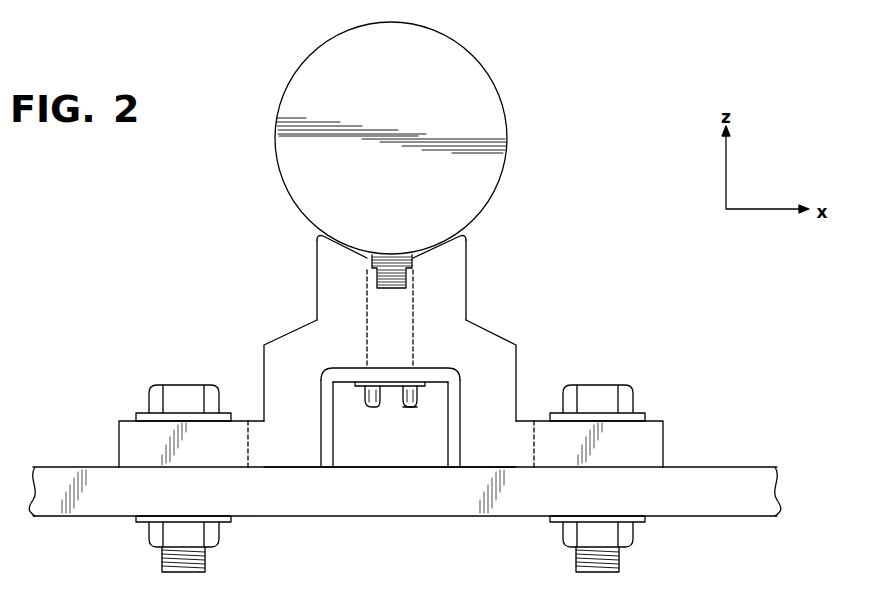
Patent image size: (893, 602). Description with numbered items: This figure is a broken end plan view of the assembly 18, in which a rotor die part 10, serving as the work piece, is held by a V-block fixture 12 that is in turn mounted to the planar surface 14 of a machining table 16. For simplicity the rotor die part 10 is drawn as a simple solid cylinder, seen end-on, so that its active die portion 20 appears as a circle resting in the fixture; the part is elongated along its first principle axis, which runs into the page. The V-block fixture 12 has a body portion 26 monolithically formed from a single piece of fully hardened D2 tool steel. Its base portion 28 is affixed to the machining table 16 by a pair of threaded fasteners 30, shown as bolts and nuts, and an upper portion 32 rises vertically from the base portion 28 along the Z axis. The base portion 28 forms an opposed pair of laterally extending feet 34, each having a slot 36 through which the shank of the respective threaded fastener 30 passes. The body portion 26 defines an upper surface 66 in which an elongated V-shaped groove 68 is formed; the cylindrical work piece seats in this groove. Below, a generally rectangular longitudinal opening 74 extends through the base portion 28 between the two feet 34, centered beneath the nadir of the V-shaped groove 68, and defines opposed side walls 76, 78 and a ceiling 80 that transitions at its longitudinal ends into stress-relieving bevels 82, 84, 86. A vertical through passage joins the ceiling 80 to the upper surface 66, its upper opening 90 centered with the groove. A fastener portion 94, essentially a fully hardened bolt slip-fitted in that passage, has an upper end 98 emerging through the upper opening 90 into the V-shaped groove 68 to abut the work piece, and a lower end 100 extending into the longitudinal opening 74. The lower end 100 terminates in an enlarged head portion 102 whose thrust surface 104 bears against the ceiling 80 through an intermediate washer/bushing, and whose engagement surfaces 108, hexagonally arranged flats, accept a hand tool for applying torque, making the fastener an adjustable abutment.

The rotor die part 10 is at (491, 78).
The V-block fixture 12 is at (273, 338).
The planar surface 14 is at (738, 467).
The machining table 16 is at (748, 497).
The assembly 18 is at (211, 116).
The active die portion 20 is at (373, 66).
The body portion 26 is at (507, 334).
The base portion 28 is at (510, 447).
The threaded fasteners 30 is at (182, 392).
The upper portion 32 is at (455, 267).
The feet 34 is at (133, 449).
The slot 36 is at (532, 420).
The upper surface 66 is at (413, 258).
The V-shaped groove 68 is at (367, 258).
The longitudinal opening 74 is at (390, 447).
The side wall 76 is at (335, 447).
The side wall 78 is at (447, 445).
The ceiling 80 is at (347, 390).
The stress-relieving bevel 82 is at (323, 412).
The stress-relieving bevel 84 is at (455, 417).
The stress-relieving bevel 86 is at (357, 373).
The upper opening 90 is at (413, 352).
The fastener portion 94 is at (403, 408).
The upper end 98 is at (393, 258).
The lower end 100 is at (370, 410).
The enlarged head portion 102 is at (412, 394).
The thrust surface 104 is at (410, 381).
The engagement surfaces 108 is at (394, 403).